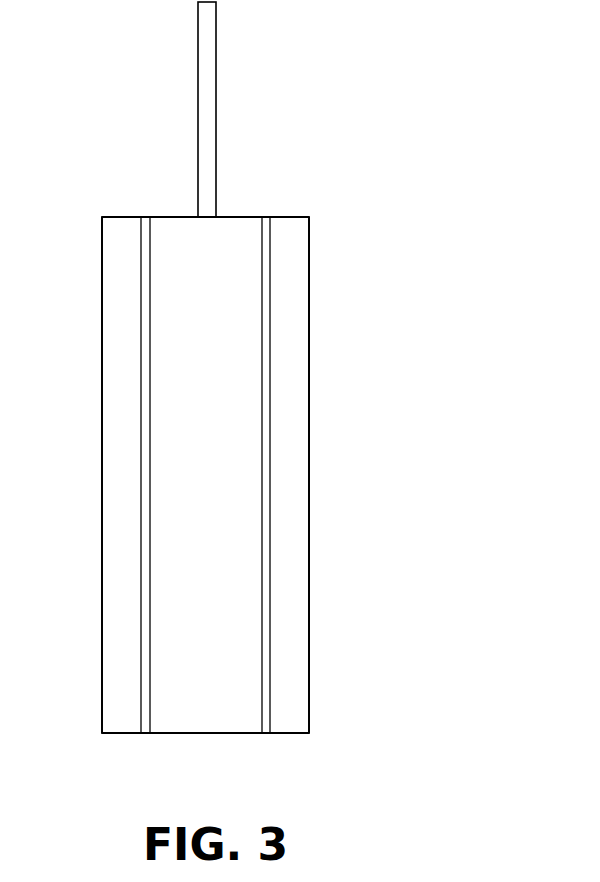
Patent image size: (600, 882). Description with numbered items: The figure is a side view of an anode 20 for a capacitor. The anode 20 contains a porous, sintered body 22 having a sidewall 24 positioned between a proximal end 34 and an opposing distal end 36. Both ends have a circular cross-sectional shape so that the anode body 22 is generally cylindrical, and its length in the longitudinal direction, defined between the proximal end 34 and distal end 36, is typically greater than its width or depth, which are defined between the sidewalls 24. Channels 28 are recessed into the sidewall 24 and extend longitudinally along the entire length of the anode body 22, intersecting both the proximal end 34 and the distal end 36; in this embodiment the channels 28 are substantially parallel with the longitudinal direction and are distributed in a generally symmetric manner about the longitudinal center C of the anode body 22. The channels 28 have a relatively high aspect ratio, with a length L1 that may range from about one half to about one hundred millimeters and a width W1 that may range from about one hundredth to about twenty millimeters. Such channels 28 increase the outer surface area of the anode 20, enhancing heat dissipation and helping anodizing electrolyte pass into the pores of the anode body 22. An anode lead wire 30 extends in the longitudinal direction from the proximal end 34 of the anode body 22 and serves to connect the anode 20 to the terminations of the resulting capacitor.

The anode 20 is at (372, 268).
The porous sintered body 22 is at (221, 305).
The sidewall 24 is at (310, 452).
The channels 28 is at (256, 517).
The anode lead wire 30 is at (209, 77).
The proximal end 34 is at (235, 217).
The distal end 36 is at (225, 733).
The longitudinal center C is at (206, 217).
The length of the channels L1 is at (85, 217).
The width of the channels W1 is at (113, 352).